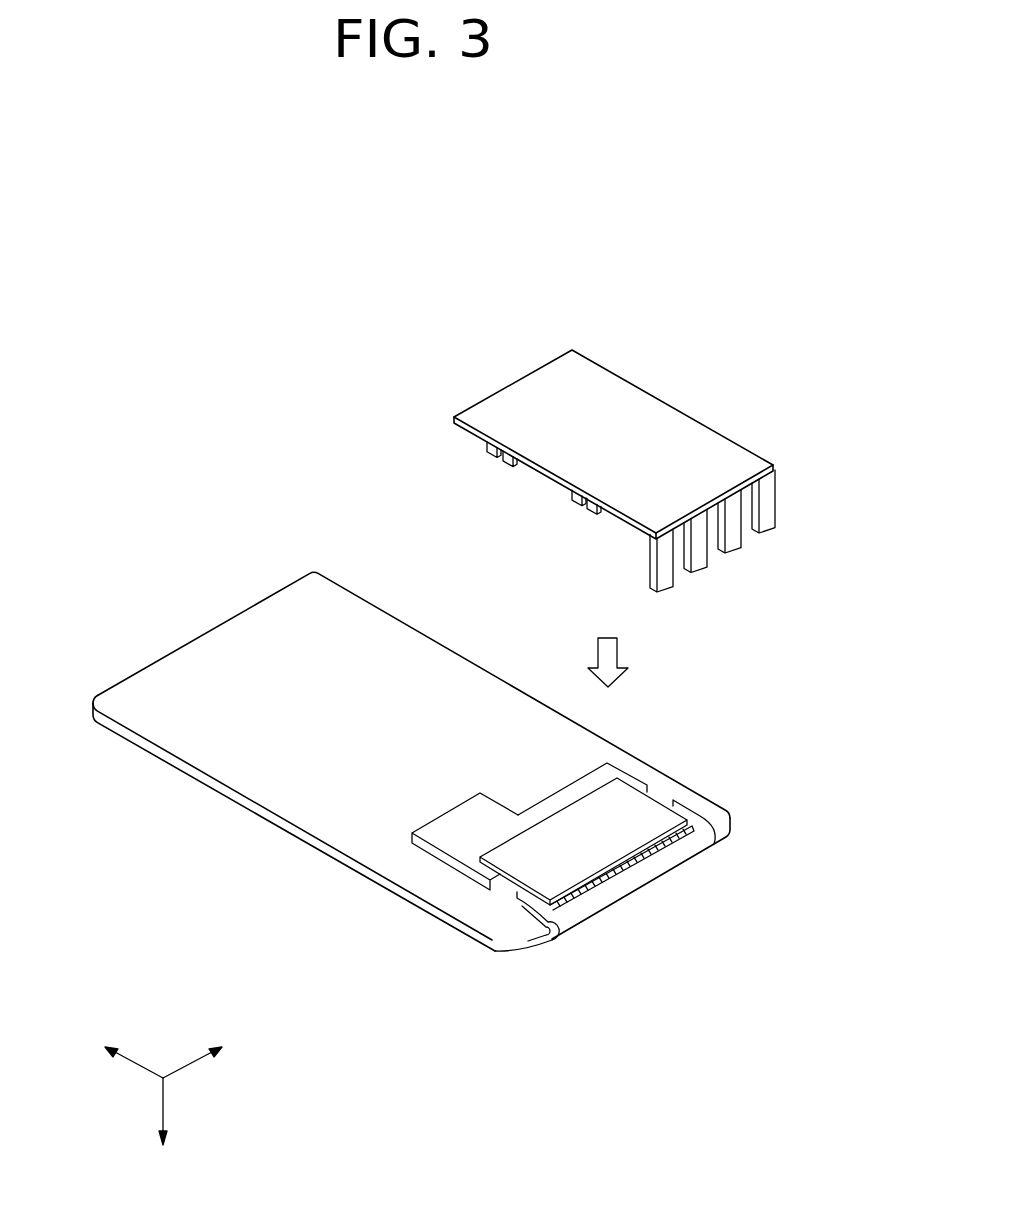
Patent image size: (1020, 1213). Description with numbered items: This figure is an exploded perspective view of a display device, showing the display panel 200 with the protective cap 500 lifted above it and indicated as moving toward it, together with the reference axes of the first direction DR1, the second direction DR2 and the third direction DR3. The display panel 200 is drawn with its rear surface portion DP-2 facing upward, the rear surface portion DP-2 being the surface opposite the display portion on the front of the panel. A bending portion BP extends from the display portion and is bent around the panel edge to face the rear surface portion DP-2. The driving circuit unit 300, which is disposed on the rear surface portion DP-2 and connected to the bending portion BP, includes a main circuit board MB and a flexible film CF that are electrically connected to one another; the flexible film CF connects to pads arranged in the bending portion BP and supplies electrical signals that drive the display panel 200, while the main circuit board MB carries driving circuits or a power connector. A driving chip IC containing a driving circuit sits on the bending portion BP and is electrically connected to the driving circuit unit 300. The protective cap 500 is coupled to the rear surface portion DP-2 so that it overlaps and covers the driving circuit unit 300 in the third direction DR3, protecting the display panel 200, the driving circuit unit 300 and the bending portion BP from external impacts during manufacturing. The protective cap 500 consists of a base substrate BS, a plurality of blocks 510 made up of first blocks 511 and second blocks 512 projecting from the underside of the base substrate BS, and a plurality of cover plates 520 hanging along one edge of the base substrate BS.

The display panel 200 is at (425, 746).
The rear surface portion DP-2 is at (195, 657).
The driving circuit unit 300 is at (441, 907).
The main circuit board MB is at (472, 856).
The flexible film CF is at (538, 885).
The driving chip IC is at (672, 843).
The bending portion BP is at (640, 879).
The protective cap 500 is at (634, 441).
The base substrate BS is at (528, 388).
The blocks 510 is at (504, 498).
The first blocks 511 is at (487, 447).
The second blocks 512 is at (553, 518).
The cover plates 520 is at (772, 500).
The first direction DR1 is at (215, 1053).
The second direction DR2 is at (112, 1053).
The third direction DR3 is at (163, 1127).